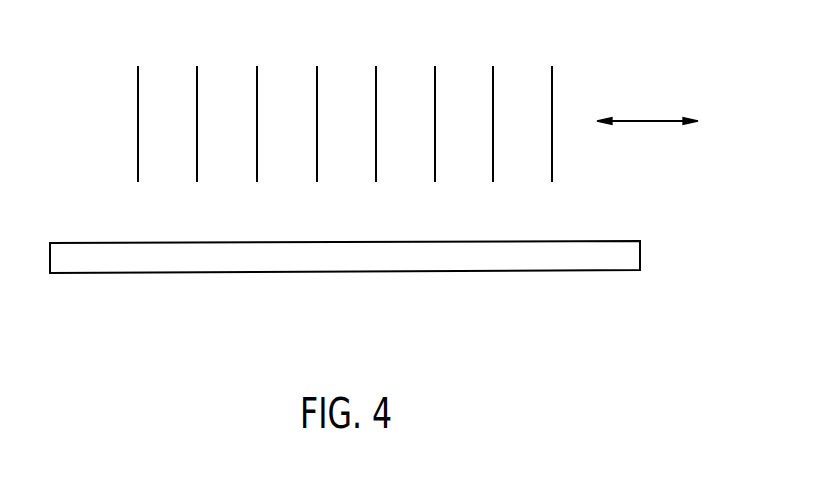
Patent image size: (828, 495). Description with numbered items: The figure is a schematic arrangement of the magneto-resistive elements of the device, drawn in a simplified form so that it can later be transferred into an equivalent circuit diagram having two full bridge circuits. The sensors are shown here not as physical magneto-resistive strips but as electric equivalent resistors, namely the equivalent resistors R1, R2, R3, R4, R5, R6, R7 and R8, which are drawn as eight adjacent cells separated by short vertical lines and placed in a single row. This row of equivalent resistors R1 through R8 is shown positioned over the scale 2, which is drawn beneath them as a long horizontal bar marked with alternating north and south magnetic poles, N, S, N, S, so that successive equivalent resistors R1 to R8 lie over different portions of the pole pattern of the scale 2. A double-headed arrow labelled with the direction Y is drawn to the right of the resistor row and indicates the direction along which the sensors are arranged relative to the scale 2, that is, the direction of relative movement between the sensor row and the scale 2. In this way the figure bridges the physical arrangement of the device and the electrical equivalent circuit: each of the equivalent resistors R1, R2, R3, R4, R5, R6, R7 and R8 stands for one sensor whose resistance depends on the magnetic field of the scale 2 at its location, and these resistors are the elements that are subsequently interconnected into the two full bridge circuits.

The scale 2 is at (618, 248).
The direction Y is at (645, 121).
The equivalent resistor R1 is at (120, 124).
The equivalent resistor R2 is at (179, 124).
The equivalent resistor R3 is at (239, 124).
The equivalent resistor R4 is at (299, 124).
The equivalent resistor R5 is at (359, 124).
The equivalent resistor R6 is at (417, 124).
The equivalent resistor R7 is at (476, 124).
The equivalent resistor R8 is at (535, 124).